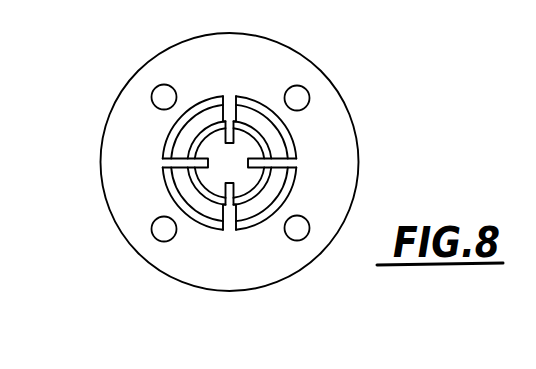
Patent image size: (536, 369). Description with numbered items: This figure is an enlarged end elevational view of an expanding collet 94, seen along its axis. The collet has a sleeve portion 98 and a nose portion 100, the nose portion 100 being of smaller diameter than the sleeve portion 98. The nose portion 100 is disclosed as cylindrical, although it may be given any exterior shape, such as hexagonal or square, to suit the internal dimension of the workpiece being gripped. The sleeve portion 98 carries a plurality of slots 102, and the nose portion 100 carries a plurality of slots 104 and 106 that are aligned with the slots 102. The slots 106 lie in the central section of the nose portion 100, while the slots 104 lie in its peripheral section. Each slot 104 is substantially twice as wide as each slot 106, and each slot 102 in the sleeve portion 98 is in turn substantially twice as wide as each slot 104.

The expanding collet 94 is at (113, 69).
The sleeve portion 98 is at (281, 204).
The nose portion 100 is at (288, 183).
The slots 102 is at (232, 112).
The slots 104 is at (263, 132).
The slots 106 is at (247, 150).